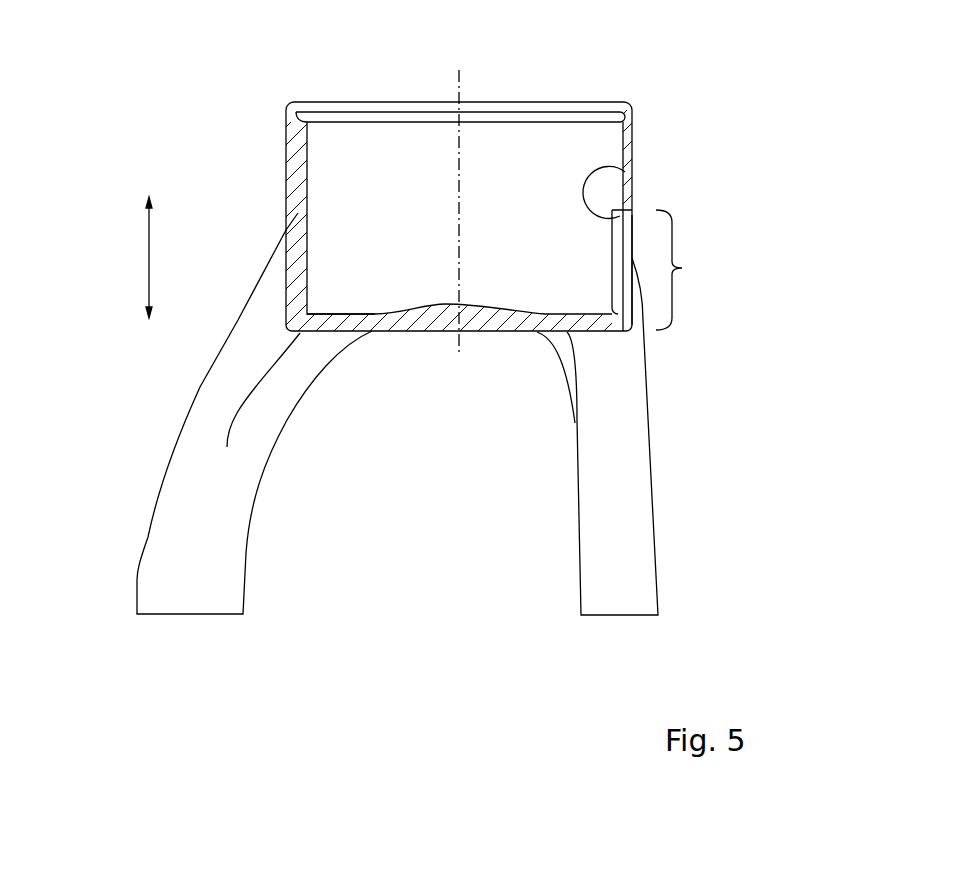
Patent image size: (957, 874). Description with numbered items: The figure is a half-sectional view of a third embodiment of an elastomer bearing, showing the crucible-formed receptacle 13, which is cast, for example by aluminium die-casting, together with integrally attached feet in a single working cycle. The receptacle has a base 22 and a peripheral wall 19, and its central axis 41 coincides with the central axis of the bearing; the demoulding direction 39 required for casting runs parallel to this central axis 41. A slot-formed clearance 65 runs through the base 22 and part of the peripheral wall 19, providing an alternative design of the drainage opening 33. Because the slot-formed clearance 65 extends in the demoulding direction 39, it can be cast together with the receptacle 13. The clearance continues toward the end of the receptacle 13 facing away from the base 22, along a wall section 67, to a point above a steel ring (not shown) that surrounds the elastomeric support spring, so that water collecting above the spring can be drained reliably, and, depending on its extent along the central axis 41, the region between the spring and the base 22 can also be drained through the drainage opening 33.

The crucible-formed receptacle 13 is at (265, 180).
The peripheral wall 19 is at (627, 140).
The wall section 67 is at (633, 168).
The drainage opening 33 is at (704, 241).
The slot-formed clearance 65 is at (684, 269).
The central axis 41 is at (462, 88).
The demoulding direction 39 is at (148, 258).
The base 22 is at (358, 301).